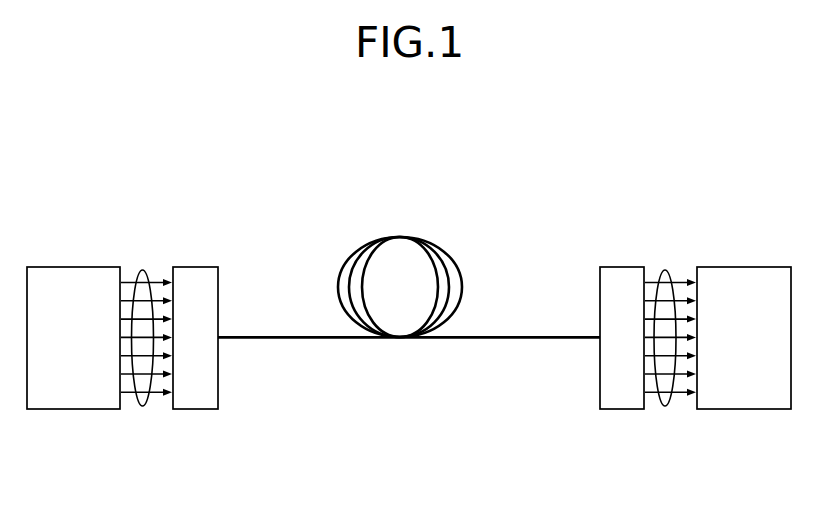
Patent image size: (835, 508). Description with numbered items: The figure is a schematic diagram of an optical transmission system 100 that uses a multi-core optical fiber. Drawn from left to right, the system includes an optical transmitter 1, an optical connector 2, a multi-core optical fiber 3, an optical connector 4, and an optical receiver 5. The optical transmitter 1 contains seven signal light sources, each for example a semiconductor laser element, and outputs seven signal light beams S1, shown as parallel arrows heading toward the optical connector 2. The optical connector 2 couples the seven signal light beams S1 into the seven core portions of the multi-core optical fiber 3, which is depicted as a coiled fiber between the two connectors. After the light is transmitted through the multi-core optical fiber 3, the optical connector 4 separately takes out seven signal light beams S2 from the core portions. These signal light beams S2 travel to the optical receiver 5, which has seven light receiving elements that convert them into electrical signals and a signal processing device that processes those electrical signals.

The optical transmission system 100 is at (676, 143).
The optical transmitter 1 is at (75, 266).
The optical connector 2 is at (197, 266).
The multi-core optical fiber 3 is at (410, 212).
The optical connector 4 is at (622, 266).
The optical receiver 5 is at (748, 266).
The signal light beams S1 is at (142, 407).
The signal light beams S2 is at (665, 407).